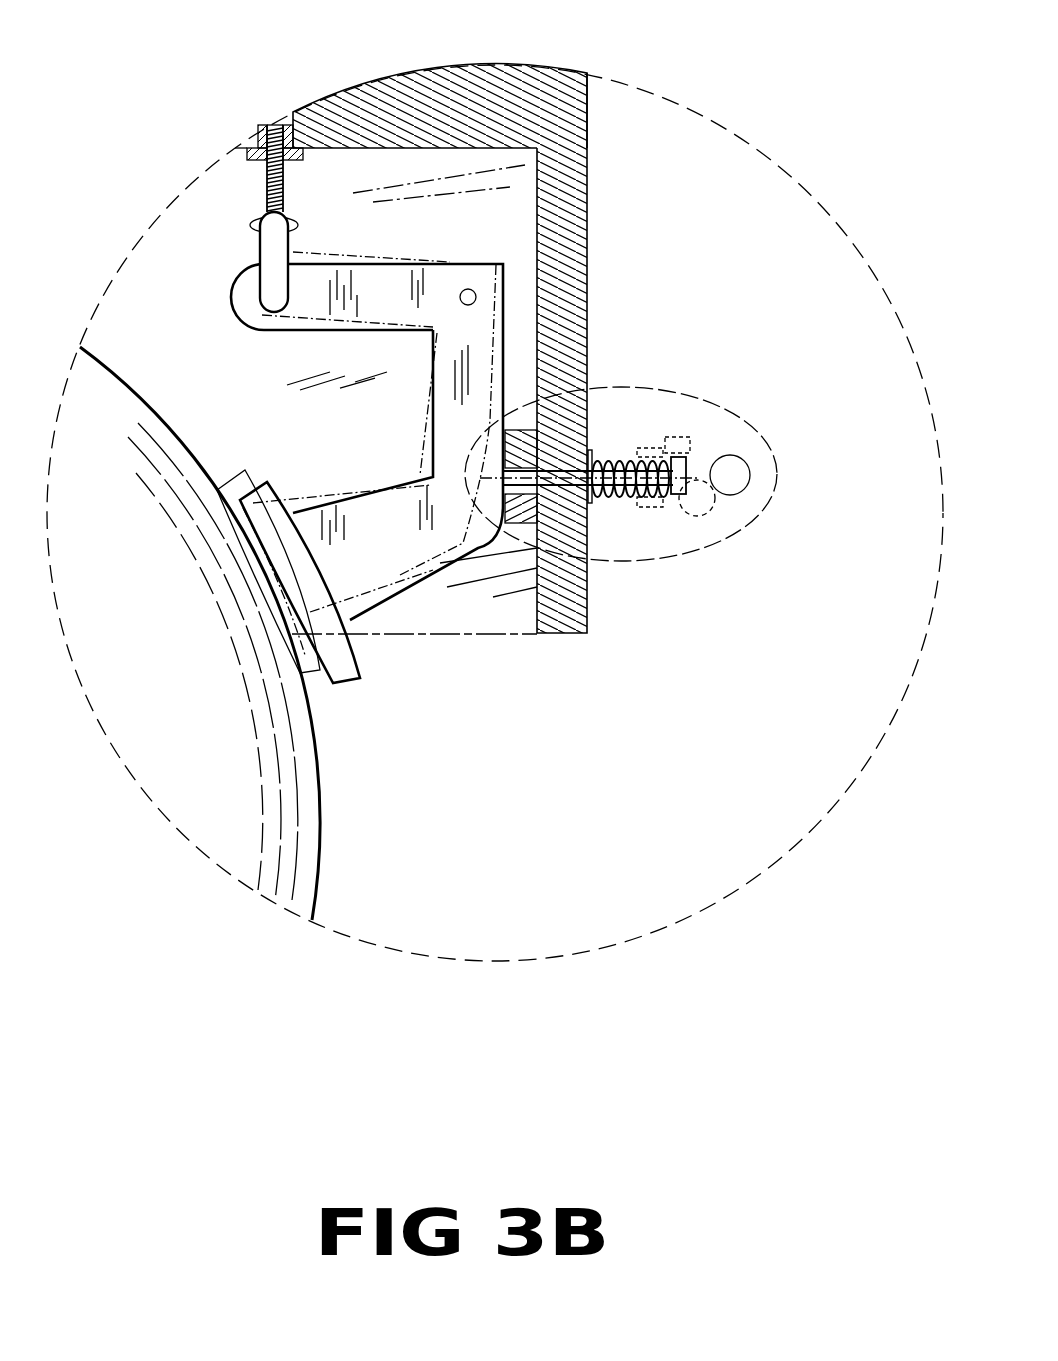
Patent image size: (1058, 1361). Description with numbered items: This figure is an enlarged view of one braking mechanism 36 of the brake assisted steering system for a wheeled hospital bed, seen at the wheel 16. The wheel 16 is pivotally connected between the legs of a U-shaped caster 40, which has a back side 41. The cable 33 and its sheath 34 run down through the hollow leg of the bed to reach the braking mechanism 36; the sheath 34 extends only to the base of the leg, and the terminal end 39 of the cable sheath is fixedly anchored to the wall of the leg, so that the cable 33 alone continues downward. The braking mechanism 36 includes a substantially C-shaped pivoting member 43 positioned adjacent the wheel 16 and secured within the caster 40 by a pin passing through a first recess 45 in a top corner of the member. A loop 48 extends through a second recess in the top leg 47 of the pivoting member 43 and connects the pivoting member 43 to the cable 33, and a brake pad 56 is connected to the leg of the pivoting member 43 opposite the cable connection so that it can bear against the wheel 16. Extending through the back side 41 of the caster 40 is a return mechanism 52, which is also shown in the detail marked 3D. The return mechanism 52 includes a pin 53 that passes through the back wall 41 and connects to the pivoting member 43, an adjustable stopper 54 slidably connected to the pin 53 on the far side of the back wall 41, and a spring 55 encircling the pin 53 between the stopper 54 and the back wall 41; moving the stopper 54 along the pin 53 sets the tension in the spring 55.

The wheel 16 is at (292, 877).
The cable 33 is at (281, 184).
The sheath 34 is at (281, 126).
The braking mechanism 36 is at (468, 680).
The terminal end of the cable sheath 39 is at (245, 153).
The caster 40 is at (587, 110).
The back side of the caster 41 is at (573, 260).
The pivoting member 43 is at (373, 520).
The first recess 45 is at (471, 290).
The top leg 47 is at (391, 283).
The loop 48 is at (276, 283).
The return mechanism 52 is at (630, 560).
The pin 53 is at (594, 466).
The adjustable stopper 54 is at (684, 468).
The spring 55 is at (662, 495).
The brake pad 56 is at (342, 658).
The detail view 3D region 3D is at (700, 550).